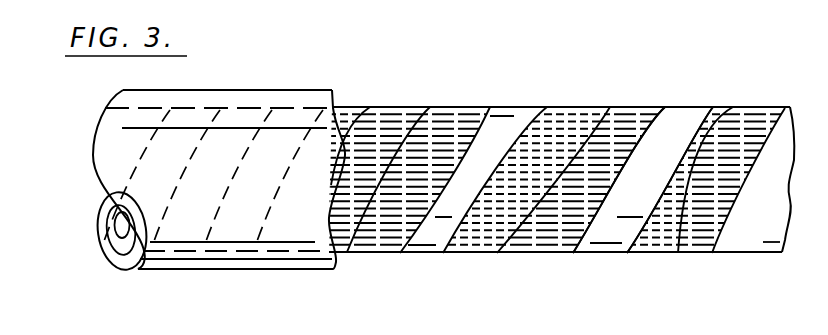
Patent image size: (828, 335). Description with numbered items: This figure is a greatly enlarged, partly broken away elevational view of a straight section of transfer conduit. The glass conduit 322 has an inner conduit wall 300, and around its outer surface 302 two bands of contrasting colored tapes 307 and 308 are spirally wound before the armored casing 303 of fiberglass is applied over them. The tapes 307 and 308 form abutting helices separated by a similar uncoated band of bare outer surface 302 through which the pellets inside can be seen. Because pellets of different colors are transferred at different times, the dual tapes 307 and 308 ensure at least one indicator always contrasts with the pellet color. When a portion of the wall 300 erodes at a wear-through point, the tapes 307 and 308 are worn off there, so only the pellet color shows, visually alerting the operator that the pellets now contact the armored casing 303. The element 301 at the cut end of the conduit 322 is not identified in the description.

The conduit wall 300 is at (118, 250).
The center conductor 301 is at (118, 229).
The outer surface 302 is at (496, 128).
The armored casing 303 is at (100, 216).
The first colored tape 307 is at (596, 97).
The second colored tape 308 is at (657, 99).
The glass conduit 322 is at (797, 206).